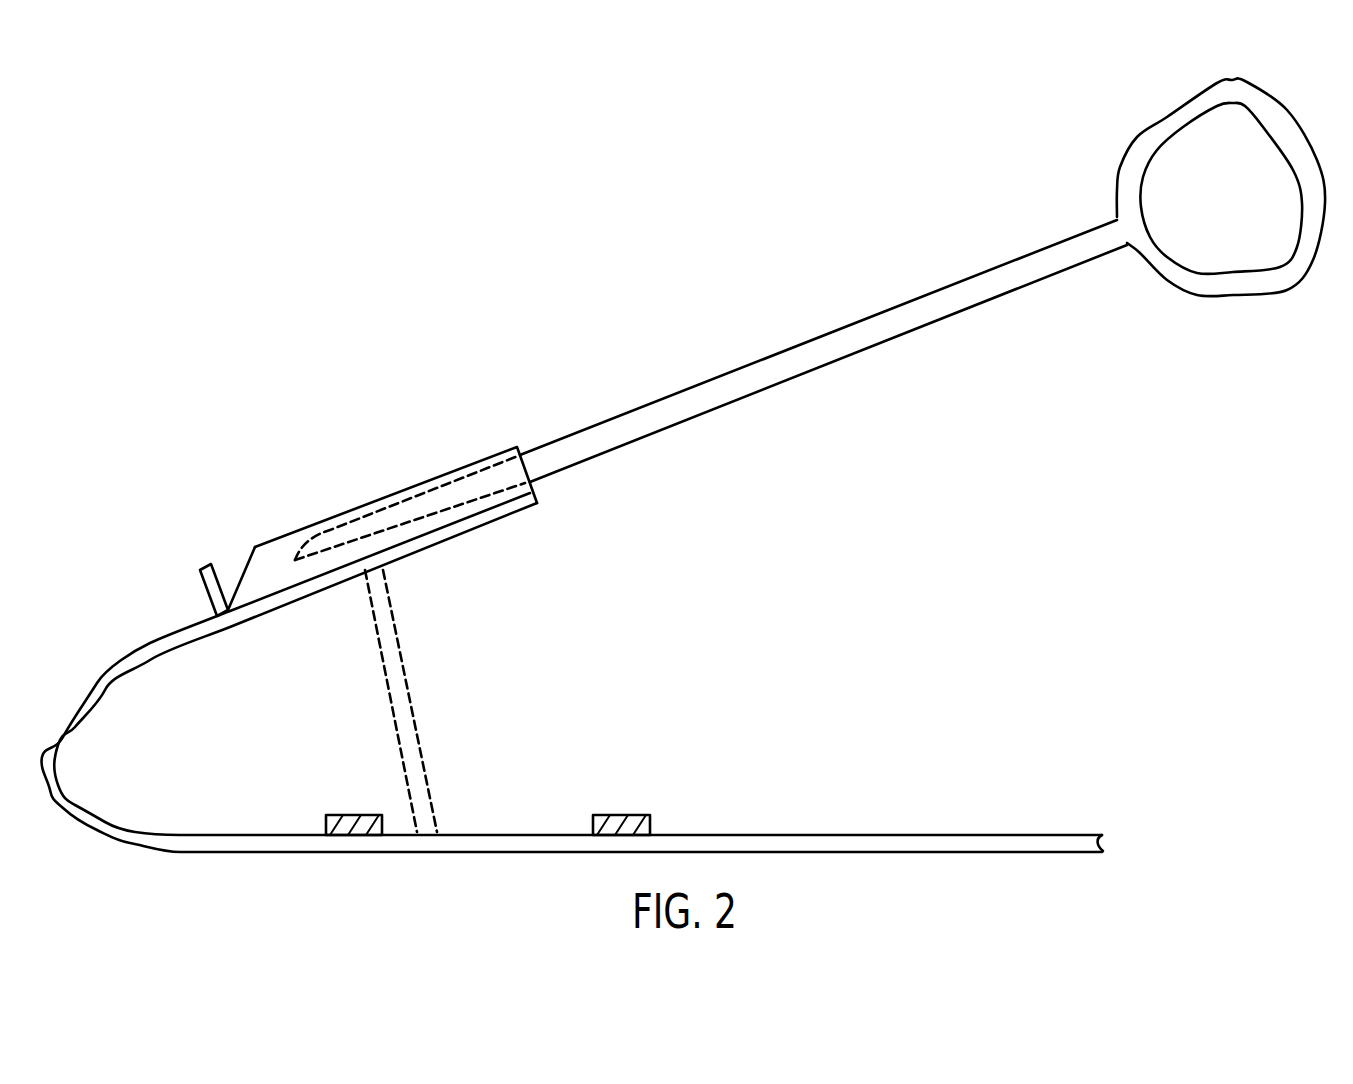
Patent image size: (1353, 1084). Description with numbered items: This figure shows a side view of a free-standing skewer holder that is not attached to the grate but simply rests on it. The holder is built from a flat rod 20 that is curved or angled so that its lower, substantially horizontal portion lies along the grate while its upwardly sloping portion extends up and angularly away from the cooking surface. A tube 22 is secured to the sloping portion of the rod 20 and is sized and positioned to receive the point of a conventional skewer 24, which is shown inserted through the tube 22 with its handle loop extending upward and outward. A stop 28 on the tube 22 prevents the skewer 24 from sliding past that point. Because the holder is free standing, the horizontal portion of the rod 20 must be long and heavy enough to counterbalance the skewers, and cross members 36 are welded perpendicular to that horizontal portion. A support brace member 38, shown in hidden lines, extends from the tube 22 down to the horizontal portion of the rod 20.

The rod 20 is at (48, 762).
The tube 22 is at (405, 490).
The skewer 24 is at (803, 350).
The stop 28 is at (206, 592).
The cross member 36 is at (353, 815).
The support brace member 38 is at (408, 690).